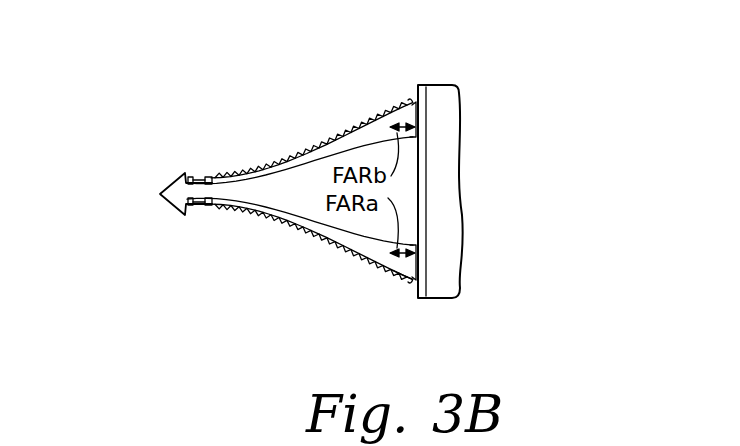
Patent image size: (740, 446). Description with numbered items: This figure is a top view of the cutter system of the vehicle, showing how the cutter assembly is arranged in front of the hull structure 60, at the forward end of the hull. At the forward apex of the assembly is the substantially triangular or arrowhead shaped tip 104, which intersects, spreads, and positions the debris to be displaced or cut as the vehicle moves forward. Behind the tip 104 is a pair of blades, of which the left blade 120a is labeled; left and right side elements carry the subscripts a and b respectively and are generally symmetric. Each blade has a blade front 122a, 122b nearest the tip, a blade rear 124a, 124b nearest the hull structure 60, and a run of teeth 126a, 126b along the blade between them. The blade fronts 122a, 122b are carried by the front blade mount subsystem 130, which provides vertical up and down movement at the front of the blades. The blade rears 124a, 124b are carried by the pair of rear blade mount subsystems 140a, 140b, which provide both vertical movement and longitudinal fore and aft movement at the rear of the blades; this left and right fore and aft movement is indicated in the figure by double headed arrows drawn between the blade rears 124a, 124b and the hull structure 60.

The hull structure 60 is at (452, 169).
The tip 104 is at (160, 195).
The front blade mount subsystem 130 is at (201, 172).
The blade 120a is at (275, 214).
The blade front 122a is at (222, 209).
The blade front 122b is at (225, 169).
The blade rear 124a is at (385, 271).
The blade rear 124b is at (388, 105).
The teeth 126a is at (338, 236).
The teeth 126b is at (311, 147).
The rear blade mount subsystem 140a is at (415, 281).
The rear blade mount subsystem 140b is at (410, 97).